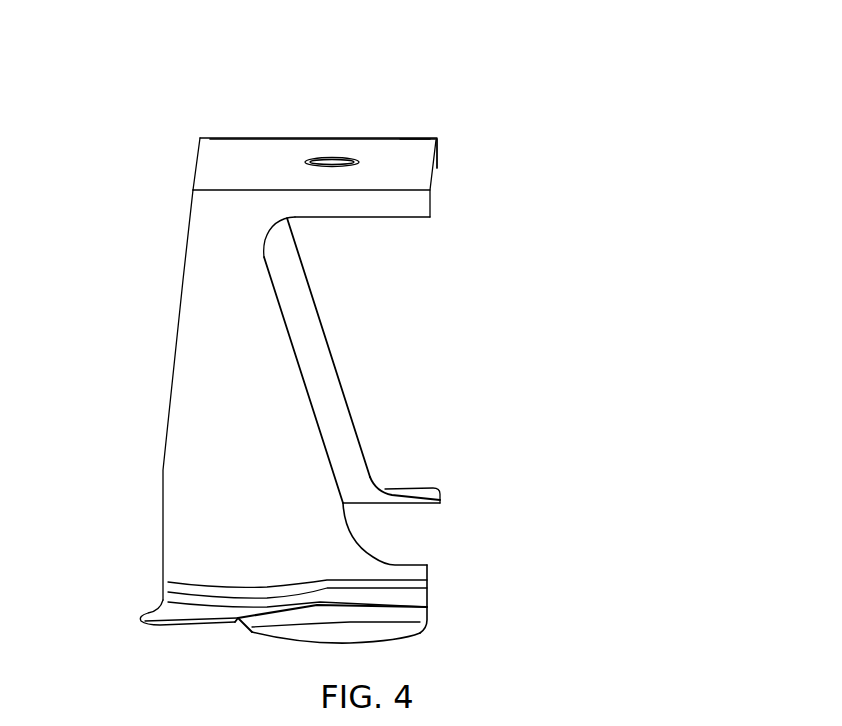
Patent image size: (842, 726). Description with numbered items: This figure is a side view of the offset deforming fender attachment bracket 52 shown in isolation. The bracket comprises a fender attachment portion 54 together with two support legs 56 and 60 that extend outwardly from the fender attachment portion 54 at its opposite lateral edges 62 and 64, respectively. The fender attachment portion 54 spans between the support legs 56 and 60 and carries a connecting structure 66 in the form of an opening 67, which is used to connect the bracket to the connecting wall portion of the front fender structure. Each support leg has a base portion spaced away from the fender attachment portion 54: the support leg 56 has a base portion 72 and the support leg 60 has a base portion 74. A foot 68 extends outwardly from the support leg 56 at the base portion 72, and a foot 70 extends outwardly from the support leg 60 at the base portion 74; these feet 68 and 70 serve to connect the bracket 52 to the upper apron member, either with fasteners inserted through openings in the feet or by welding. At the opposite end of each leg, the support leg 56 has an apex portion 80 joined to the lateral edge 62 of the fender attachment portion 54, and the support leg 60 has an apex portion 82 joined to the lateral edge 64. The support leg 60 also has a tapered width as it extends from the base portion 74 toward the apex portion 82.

The offset deforming fender attachment bracket 52 is at (572, 175).
The fender attachment portion 54 is at (468, 122).
The support leg 56 is at (145, 447).
The support leg 60 is at (393, 397).
The lateral edge 62 is at (407, 187).
The lateral edge 64 is at (410, 132).
The connecting structure 66 is at (342, 130).
The opening 67 is at (320, 158).
The foot 68 is at (308, 643).
The foot 70 is at (438, 508).
The base portion 72 is at (137, 567).
The base portion 74 is at (390, 477).
The apex portion 80 is at (157, 215).
The apex portion 82 is at (310, 238).